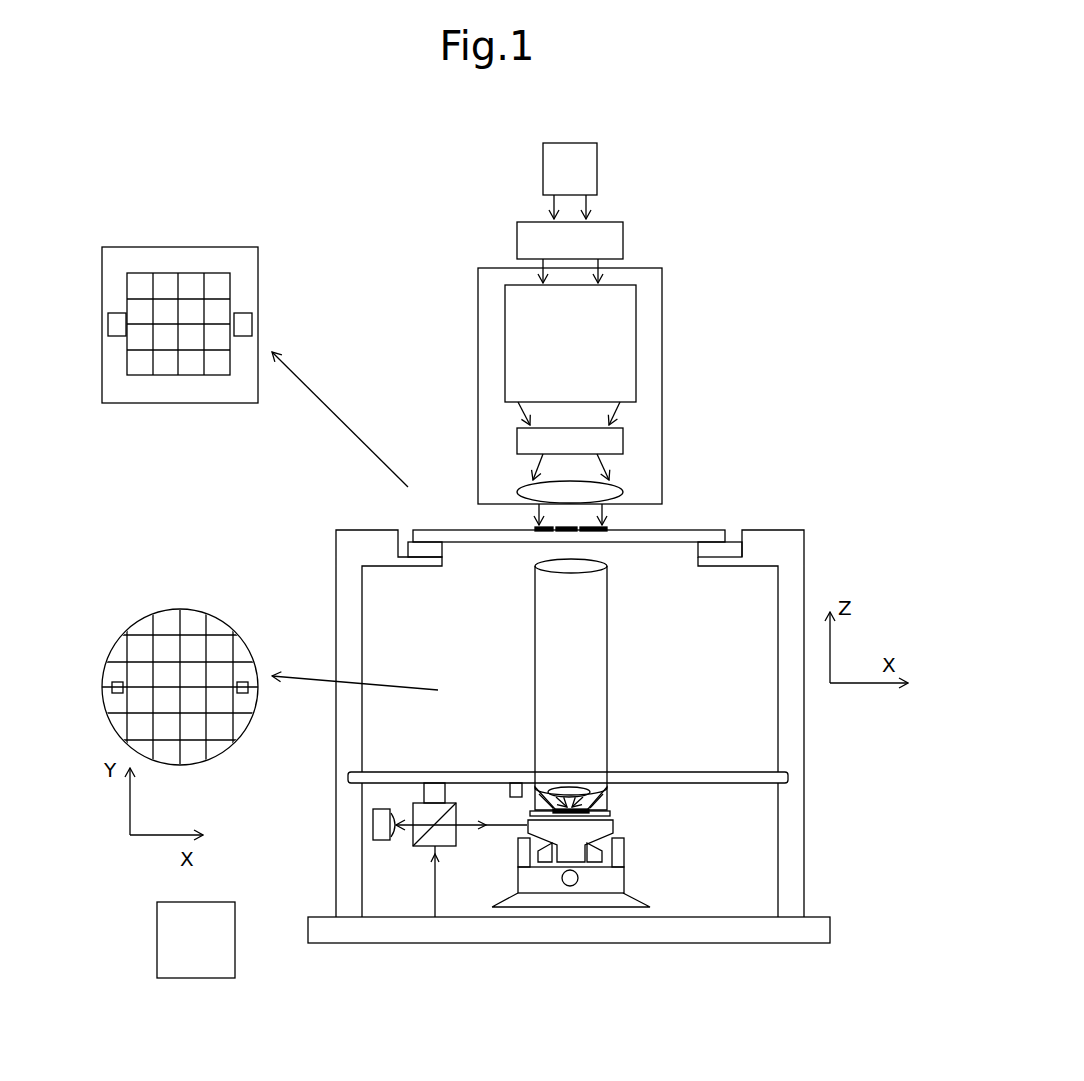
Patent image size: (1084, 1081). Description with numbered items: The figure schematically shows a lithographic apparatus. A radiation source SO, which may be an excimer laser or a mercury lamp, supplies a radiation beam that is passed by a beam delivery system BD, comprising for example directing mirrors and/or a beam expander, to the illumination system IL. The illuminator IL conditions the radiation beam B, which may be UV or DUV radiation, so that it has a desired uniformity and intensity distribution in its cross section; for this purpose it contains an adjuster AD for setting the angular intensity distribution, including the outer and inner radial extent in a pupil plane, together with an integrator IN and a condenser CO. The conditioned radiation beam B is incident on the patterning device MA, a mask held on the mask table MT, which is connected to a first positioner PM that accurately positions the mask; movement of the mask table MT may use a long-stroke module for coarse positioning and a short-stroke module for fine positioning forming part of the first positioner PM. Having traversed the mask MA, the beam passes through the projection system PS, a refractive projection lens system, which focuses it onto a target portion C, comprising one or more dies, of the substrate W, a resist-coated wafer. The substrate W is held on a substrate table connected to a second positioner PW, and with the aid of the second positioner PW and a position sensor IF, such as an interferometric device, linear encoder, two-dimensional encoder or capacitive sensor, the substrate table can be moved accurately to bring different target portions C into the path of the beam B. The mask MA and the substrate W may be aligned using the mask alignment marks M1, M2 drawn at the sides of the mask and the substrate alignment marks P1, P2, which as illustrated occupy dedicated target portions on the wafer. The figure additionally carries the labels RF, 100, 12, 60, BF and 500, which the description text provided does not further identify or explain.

The radiation source SO is at (597, 176).
The beam delivery system BD is at (623, 248).
The illumination system IL is at (662, 311).
The adjuster AD is at (636, 356).
The integrator IN is at (623, 441).
The condenser CO is at (620, 492).
The radiation beam B is at (606, 527).
The patterning device MA is at (540, 527).
The target portion C is at (168, 346).
The mask alignment mark M1 is at (243, 313).
The mask alignment mark M2 is at (117, 313).
The mask table MT is at (705, 530).
The first positioner PM is at (735, 551).
The reference frame RF is at (692, 771).
The projection system PS is at (608, 658).
The lens element 100 is at (565, 790).
The mirror 12 is at (608, 798).
The substrate W is at (517, 808).
The substrate alignment mark P1 is at (117, 682).
The substrate alignment mark P2 is at (243, 682).
The substrate table 60 is at (613, 826).
The second positioner PW is at (608, 878).
The base frame BF is at (692, 943).
The position sensor IF is at (406, 853).
The control unit 500 is at (174, 955).